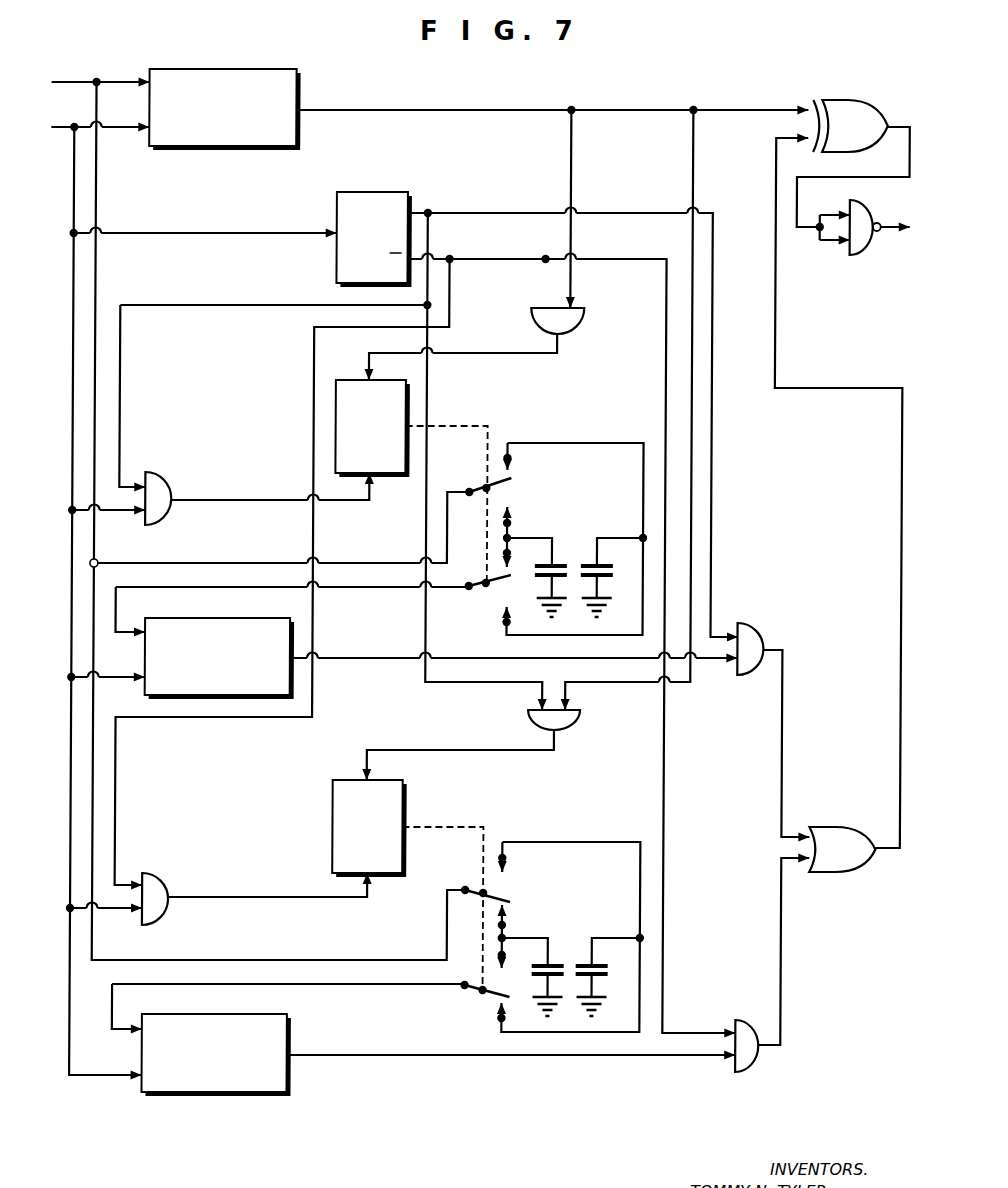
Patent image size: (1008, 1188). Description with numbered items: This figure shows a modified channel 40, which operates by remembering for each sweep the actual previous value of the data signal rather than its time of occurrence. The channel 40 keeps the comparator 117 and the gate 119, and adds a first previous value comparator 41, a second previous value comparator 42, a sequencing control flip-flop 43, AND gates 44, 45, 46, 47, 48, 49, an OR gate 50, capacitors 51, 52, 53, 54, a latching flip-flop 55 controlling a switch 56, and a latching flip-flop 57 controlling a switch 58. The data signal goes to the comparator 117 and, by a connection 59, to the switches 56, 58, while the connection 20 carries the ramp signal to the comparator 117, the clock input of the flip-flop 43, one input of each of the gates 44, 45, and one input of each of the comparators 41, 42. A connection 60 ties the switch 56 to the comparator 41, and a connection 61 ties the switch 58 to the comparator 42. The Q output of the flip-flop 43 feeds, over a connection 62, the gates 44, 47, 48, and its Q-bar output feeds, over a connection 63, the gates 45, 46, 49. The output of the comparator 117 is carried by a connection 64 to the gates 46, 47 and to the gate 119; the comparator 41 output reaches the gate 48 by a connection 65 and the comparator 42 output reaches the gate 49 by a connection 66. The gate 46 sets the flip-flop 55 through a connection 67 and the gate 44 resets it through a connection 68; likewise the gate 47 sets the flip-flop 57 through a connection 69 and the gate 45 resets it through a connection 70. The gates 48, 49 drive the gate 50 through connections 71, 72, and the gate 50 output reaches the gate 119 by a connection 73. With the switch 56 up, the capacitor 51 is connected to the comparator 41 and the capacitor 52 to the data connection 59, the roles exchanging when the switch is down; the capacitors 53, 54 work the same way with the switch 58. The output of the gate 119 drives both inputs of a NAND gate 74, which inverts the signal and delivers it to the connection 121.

The connection 20 is at (63, 128).
The channel 40 is at (200, 1131).
The first previous value comparator 41 is at (229, 618).
The second previous value comparator 42 is at (221, 1014).
The sequencing control flip-flop 43 is at (372, 192).
The AND gate 44 is at (169, 480).
The AND gate 45 is at (161, 872).
The AND gate 46 is at (578, 324).
The AND gate 47 is at (572, 728).
The AND gate 48 is at (761, 636).
The AND gate 49 is at (756, 1068).
The OR gate 50 is at (839, 827).
The capacitor 51 is at (538, 572).
The capacitor 52 is at (616, 572).
The capacitor 53 is at (537, 976).
The capacitor 54 is at (613, 976).
The latching flip-flop 55 is at (351, 380).
The switch 56 is at (534, 485).
The latching flip-flop 57 is at (349, 780).
The switch 58 is at (526, 886).
The connection 59 is at (99, 184).
The connection 60 is at (360, 588).
The connection 61 is at (347, 986).
The connection 62 is at (430, 235).
The connection 63 is at (452, 300).
The connection 64 is at (576, 110).
The connection 65 is at (373, 660).
The connection 66 is at (461, 1060).
The connection 67 is at (505, 355).
The connection 68 is at (270, 501).
The connection 69 is at (468, 752).
The connection 70 is at (270, 899).
The connection 71 is at (787, 744).
The connection 72 is at (787, 952).
The connection 73 is at (903, 526).
The NAND gate 74 is at (861, 255).
The comparator 117 is at (226, 69).
The gate 119 is at (860, 100).
The connection 121 is at (891, 230).